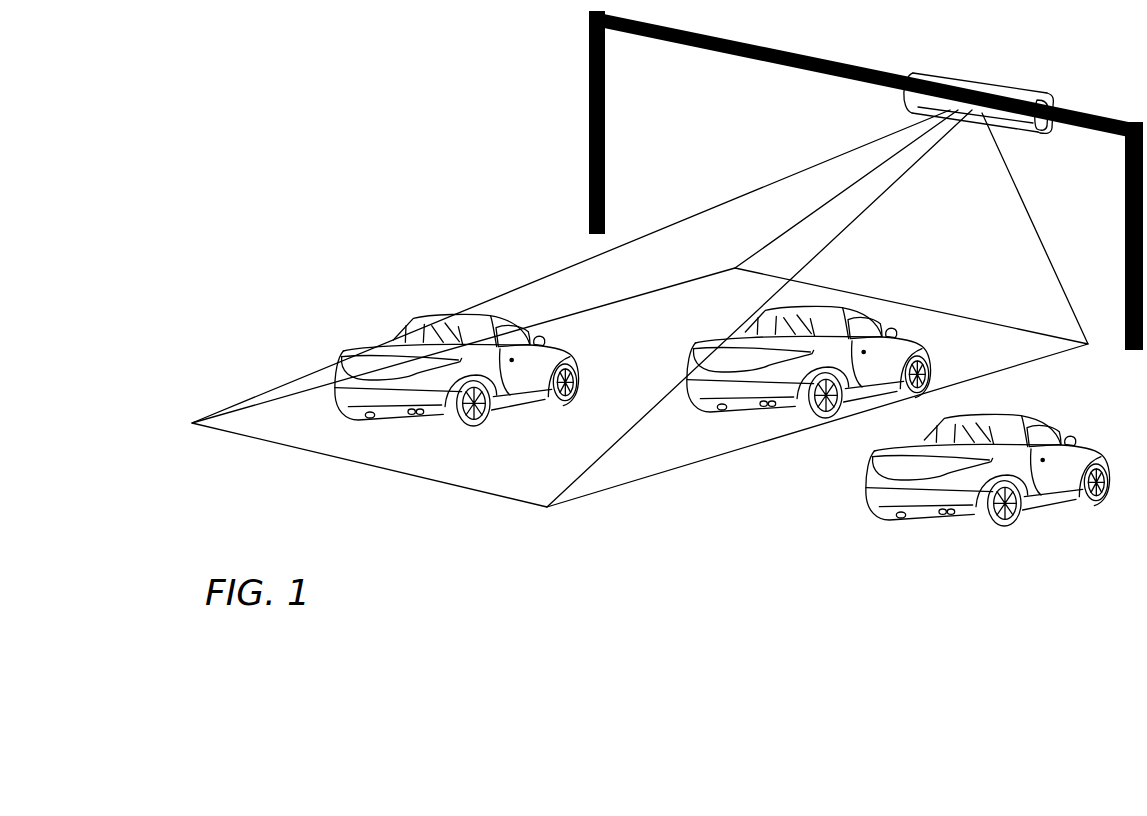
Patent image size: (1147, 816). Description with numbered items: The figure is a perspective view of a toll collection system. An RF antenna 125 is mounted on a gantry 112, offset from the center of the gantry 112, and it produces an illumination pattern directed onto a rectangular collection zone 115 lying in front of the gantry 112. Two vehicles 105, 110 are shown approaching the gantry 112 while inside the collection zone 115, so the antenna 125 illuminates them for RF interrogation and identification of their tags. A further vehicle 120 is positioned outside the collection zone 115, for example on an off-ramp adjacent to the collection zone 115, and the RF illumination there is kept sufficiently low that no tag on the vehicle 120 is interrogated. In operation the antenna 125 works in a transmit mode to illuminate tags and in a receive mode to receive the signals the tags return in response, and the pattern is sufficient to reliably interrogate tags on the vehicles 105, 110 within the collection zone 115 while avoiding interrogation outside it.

The vehicle 105 is at (495, 318).
The vehicle 110 is at (687, 392).
The gantry 112 is at (589, 92).
The rectangular collection zone 115 is at (457, 488).
The vehicle 120 is at (867, 488).
The RF antenna 125 is at (993, 78).